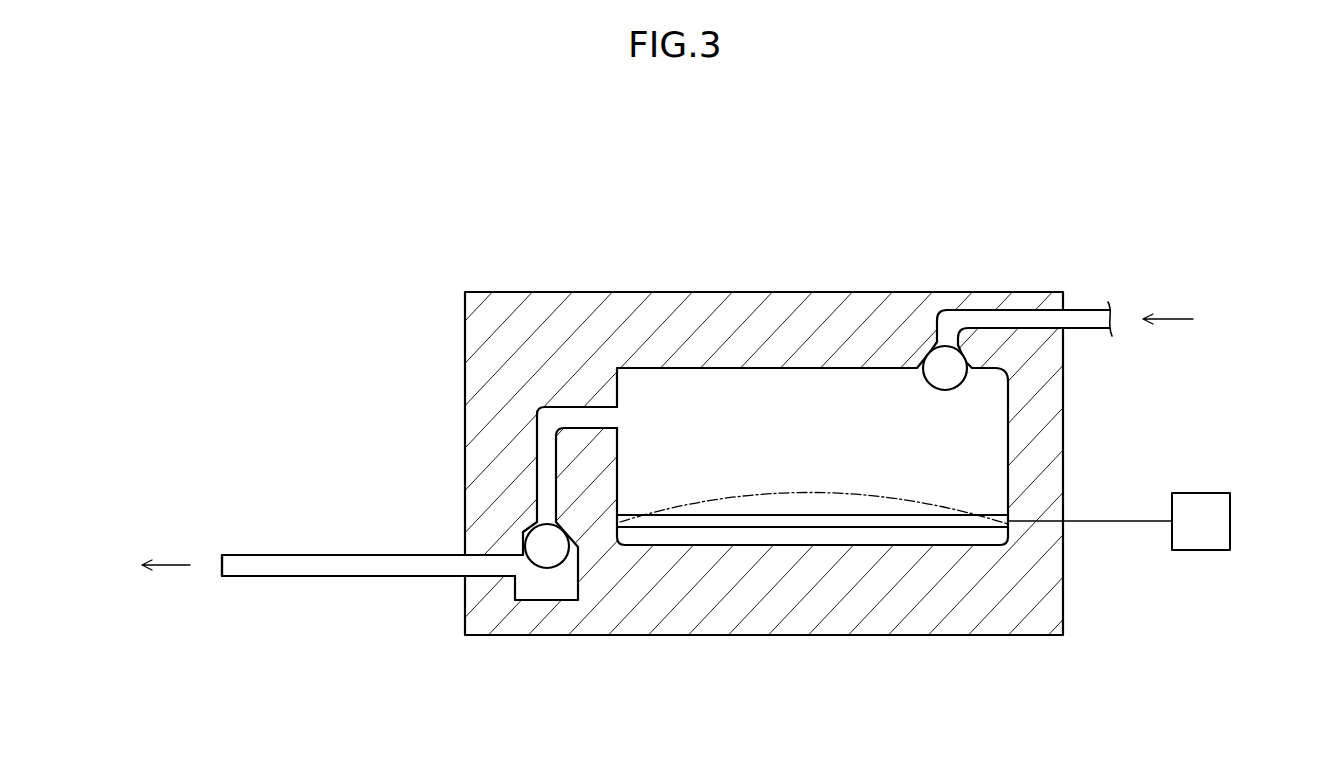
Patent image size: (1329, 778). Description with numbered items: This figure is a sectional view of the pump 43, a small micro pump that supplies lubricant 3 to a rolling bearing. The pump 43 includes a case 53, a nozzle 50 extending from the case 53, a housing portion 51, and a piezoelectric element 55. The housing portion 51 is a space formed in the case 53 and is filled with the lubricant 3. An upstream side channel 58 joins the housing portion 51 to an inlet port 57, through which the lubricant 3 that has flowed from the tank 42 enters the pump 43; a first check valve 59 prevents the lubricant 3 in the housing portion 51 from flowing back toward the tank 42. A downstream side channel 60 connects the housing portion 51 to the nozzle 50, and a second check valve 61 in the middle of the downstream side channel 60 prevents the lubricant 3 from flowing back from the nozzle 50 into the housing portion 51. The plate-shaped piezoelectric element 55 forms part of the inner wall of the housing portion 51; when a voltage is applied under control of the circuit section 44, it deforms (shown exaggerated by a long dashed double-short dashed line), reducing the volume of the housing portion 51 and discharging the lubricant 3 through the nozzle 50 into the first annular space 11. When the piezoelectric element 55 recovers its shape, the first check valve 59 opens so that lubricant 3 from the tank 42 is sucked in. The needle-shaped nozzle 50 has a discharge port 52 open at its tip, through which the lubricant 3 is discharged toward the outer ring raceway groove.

The lubricant 3 is at (819, 457).
The first annular space 11 is at (118, 581).
The tank 42 is at (1240, 335).
The pump 43 is at (836, 292).
The circuit section 44 is at (1220, 493).
The nozzle 50 is at (282, 563).
The housing portion 51 is at (716, 406).
The discharge port 52 is at (221, 565).
The case 53 is at (543, 360).
The piezoelectric element 55 is at (895, 522).
The inlet port 57 is at (1068, 329).
The upstream side channel 58 is at (1018, 328).
The first check valve 59 is at (968, 380).
The downstream side channel 60 is at (536, 474).
The second check valve 61 is at (523, 538).